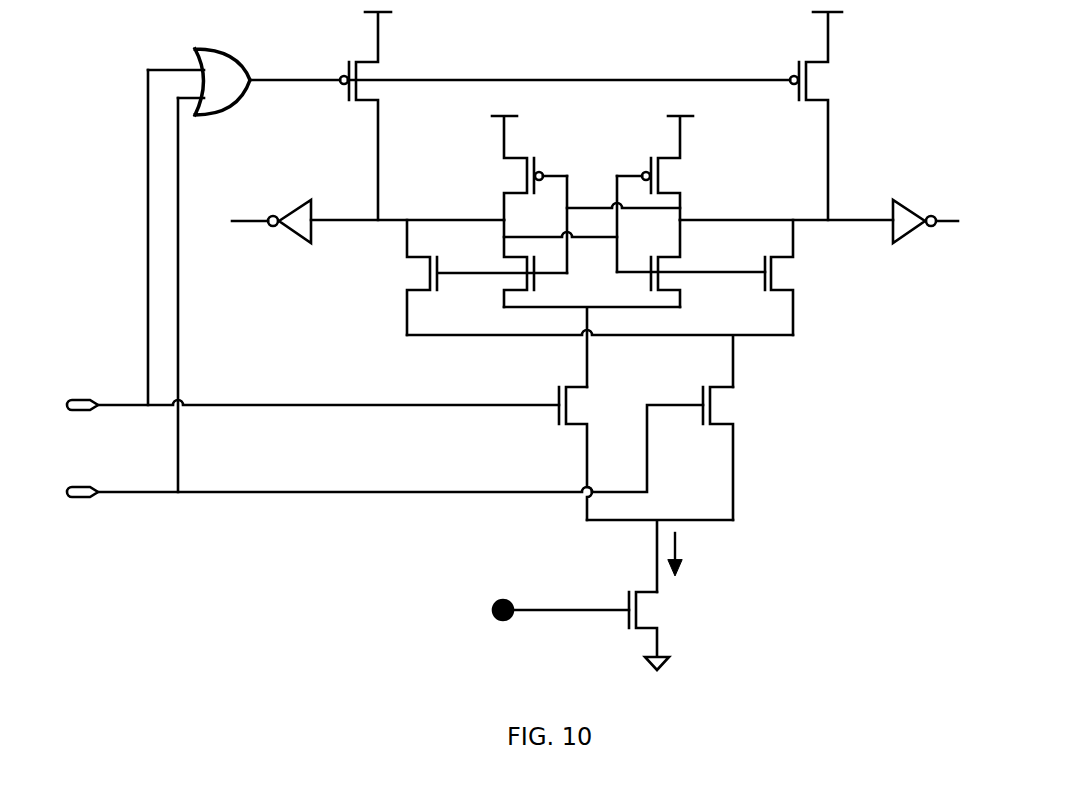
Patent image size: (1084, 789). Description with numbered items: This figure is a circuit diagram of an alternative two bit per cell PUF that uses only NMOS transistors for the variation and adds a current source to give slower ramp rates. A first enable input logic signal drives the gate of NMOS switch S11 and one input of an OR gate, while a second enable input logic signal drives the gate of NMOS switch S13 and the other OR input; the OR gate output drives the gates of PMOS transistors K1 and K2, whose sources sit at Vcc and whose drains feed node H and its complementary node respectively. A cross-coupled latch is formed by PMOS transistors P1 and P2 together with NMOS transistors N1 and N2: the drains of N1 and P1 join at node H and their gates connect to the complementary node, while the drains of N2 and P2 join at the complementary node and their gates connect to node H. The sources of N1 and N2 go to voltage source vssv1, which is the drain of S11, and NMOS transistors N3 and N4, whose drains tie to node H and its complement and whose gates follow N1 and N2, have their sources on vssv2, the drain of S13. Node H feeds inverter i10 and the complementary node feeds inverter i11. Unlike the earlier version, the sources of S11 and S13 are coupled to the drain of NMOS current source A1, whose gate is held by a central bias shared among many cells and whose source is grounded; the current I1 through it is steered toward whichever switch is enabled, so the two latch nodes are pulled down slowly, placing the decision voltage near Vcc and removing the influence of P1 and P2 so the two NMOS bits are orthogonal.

The PMOS transistor K1 is at (374, 116).
The PMOS transistor K2 is at (822, 116).
The PMOS transistor P1 is at (525, 168).
The PMOS transistor P2 is at (659, 168).
The NMOS transistor N1 is at (505, 263).
The NMOS transistor N2 is at (691, 263).
The NMOS transistor N3 is at (474, 277).
The NMOS transistor N4 is at (793, 277).
The NMOS transistor S11 is at (584, 453).
The NMOS transistor S13 is at (728, 453).
The NMOS current source A1 is at (658, 631).
The inverter i10 is at (271, 216).
The inverter i11 is at (925, 214).
The node H is at (407, 209).
The voltage source vssv1 is at (592, 338).
The voltage source vssv2 is at (600, 358).
The current I1 is at (688, 554).
The element bias is at (554, 630).